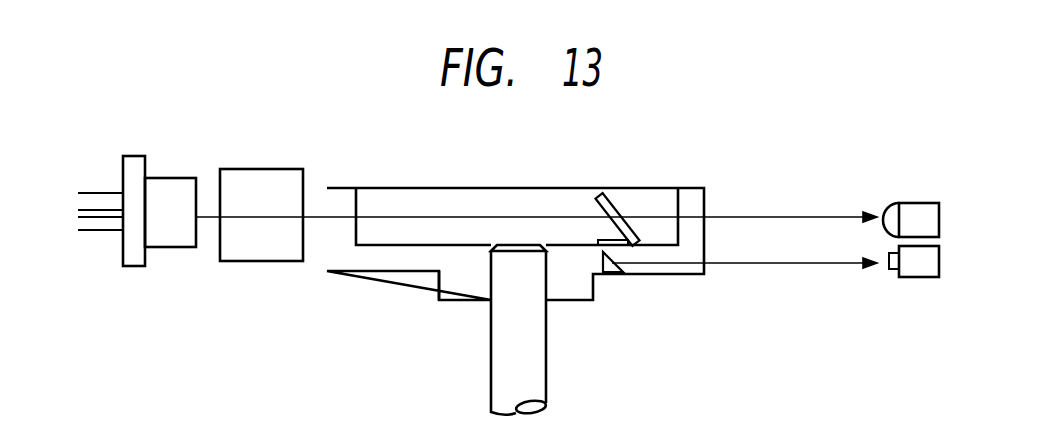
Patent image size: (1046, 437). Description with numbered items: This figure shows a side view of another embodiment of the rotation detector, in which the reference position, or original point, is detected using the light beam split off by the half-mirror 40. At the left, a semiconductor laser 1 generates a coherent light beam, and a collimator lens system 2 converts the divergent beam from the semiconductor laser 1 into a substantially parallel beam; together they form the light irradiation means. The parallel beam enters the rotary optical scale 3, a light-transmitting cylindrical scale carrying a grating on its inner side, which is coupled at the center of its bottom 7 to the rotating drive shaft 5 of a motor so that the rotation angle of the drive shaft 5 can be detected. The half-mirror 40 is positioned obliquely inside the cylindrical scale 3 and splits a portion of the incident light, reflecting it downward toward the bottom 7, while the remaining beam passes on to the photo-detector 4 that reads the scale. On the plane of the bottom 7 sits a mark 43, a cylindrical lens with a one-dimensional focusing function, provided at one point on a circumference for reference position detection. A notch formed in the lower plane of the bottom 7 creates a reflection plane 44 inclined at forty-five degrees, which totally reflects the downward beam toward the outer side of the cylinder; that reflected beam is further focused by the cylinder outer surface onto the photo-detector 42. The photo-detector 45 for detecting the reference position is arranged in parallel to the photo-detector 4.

The semiconductor laser 1 is at (170, 235).
The collimator lens system 2 is at (259, 257).
The rotary optical scale 3 is at (339, 195).
The photo-detector 4 is at (911, 203).
The drive shaft 5 is at (500, 353).
The bottom 7 is at (386, 259).
The half-mirror 40 is at (607, 203).
The photo-detector 42 is at (894, 272).
The mark 43 is at (598, 238).
The reflection plane 44 is at (613, 270).
The photo-detector 45 is at (925, 278).